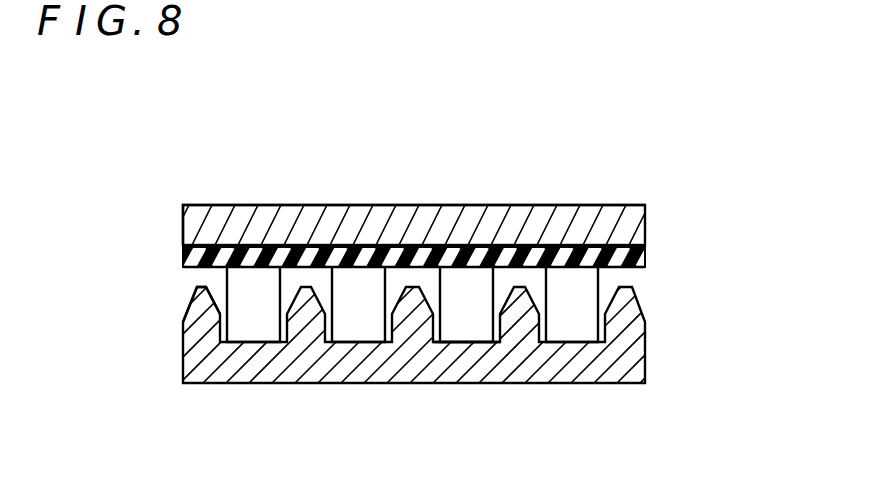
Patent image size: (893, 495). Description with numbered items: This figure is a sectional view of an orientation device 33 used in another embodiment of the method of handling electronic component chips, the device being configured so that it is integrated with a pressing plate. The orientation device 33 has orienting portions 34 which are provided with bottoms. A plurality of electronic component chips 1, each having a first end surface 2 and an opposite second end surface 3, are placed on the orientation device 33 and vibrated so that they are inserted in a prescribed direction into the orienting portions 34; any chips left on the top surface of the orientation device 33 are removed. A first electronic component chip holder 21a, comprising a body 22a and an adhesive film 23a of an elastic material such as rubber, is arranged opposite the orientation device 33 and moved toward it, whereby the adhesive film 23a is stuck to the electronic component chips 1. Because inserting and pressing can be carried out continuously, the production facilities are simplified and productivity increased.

The electronic component chip 1 is at (458, 347).
The first end surface 2 is at (558, 267).
The second end surface 3 is at (568, 343).
The first electronic component chip holder 21a is at (182, 233).
The body 22a is at (646, 218).
The adhesive film 23a is at (646, 255).
The orientation device 33 is at (310, 387).
The orienting portions 34 is at (196, 334).